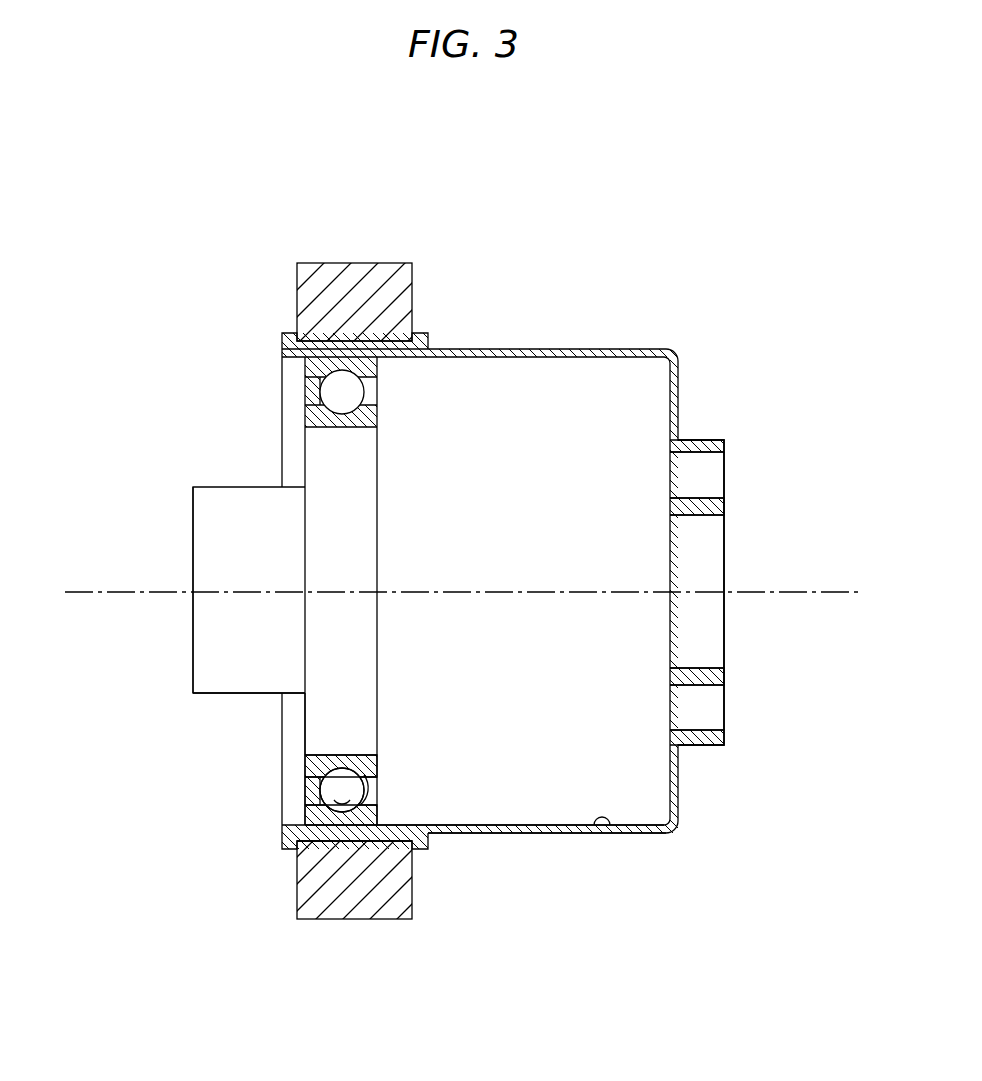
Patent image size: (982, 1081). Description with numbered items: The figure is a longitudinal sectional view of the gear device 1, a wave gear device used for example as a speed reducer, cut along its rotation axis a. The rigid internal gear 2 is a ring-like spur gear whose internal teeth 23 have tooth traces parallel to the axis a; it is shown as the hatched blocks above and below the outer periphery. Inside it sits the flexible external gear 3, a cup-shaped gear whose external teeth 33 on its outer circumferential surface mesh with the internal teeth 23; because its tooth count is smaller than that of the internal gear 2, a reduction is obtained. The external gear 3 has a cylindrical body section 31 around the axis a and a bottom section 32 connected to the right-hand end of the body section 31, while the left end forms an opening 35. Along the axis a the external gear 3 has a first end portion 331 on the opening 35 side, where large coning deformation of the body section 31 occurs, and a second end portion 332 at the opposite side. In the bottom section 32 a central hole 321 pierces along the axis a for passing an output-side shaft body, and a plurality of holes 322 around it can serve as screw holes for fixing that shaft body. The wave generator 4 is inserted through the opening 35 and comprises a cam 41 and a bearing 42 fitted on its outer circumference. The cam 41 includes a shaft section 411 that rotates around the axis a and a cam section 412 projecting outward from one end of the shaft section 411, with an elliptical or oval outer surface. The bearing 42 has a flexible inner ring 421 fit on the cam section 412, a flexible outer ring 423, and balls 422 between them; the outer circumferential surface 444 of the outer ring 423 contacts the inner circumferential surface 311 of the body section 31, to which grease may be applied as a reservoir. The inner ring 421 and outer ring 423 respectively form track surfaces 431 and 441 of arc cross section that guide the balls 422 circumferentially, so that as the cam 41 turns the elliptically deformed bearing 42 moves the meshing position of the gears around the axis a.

The gear device 1 is at (680, 165).
The internal gear 2 is at (374, 257).
The internal teeth 23 is at (320, 366).
The external gear 3 is at (491, 590).
The body section 31 is at (555, 833).
The inner circumferential surface 311 is at (604, 827).
The bottom section 32 is at (678, 392).
The hole 321 is at (708, 527).
The holes 322 is at (708, 462).
The external teeth 33 is at (308, 340).
The first end portion 331 is at (282, 383).
The second end portion 332 is at (725, 563).
The opening 35 is at (282, 413).
The wave generator 4 is at (226, 485).
The cam 41 is at (152, 712).
The shaft section 411 is at (242, 694).
The cam section 412 is at (305, 724).
The bearing 42 is at (184, 778).
The inner ring 421 is at (306, 768).
The balls 422 is at (306, 796).
The outer ring 423 is at (322, 808).
The track surface 431 is at (360, 783).
The track surface 441 is at (352, 797).
The outer circumferential surface 444 is at (352, 846).
The rotation axis a is at (127, 590).